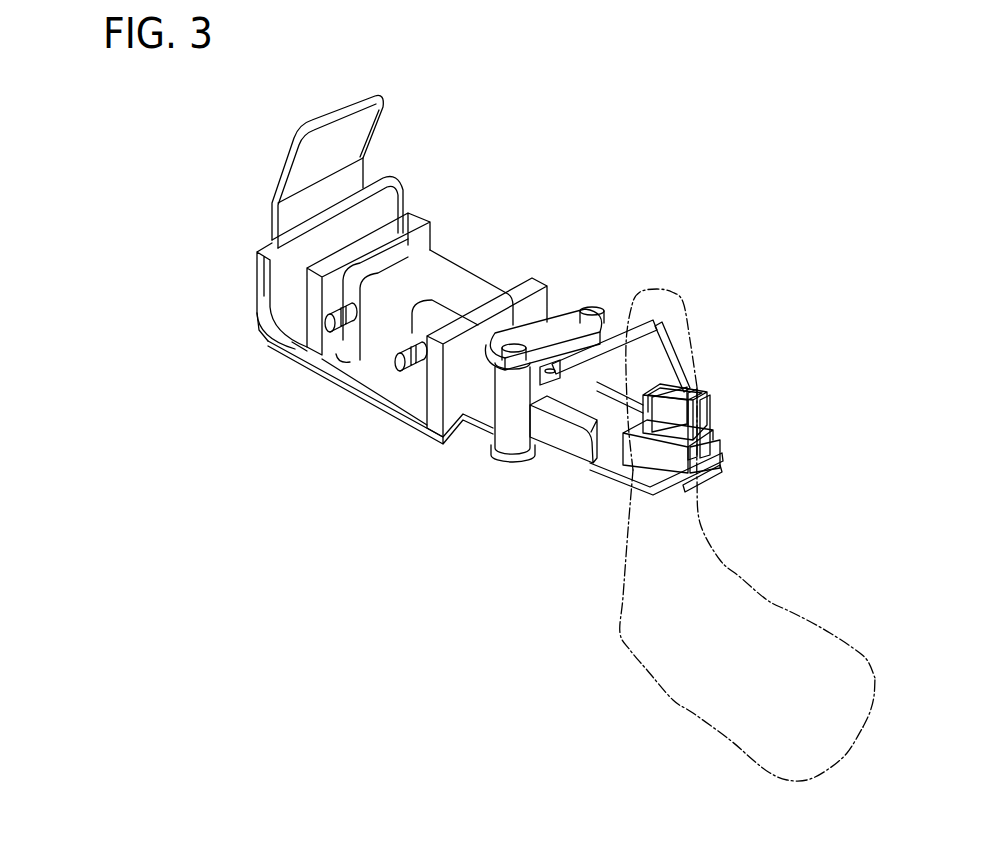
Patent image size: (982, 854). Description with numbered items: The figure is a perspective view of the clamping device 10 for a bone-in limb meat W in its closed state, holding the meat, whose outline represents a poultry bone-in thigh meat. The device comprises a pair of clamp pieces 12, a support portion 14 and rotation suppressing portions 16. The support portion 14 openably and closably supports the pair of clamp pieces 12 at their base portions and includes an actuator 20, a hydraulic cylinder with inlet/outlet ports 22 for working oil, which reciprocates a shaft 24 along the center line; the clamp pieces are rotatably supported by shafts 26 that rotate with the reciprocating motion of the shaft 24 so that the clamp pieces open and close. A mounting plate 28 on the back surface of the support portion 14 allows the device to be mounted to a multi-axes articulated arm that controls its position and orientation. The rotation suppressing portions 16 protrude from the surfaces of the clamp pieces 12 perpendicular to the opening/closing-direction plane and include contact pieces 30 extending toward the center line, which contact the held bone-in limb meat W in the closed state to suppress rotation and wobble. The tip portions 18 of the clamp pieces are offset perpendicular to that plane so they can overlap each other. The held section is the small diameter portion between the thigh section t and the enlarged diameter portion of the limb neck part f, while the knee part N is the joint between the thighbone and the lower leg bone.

The clamping device 10 is at (592, 143).
The pair of clamp pieces 12 is at (560, 475).
The support portion 14 is at (489, 243).
The rotation suppressing portions 16 is at (640, 457).
The tip portions 18 is at (718, 470).
The actuator 20 is at (378, 338).
The inlet/outlet ports 22 is at (322, 327).
The shaft 24 is at (558, 400).
The shafts 26 is at (492, 376).
The mounting plate 28 is at (275, 175).
The contact pieces 30 is at (708, 402).
The limb neck part f is at (690, 356).
The bone-in limb meat W is at (745, 580).
The knee part N is at (620, 634).
The thigh section t is at (877, 678).